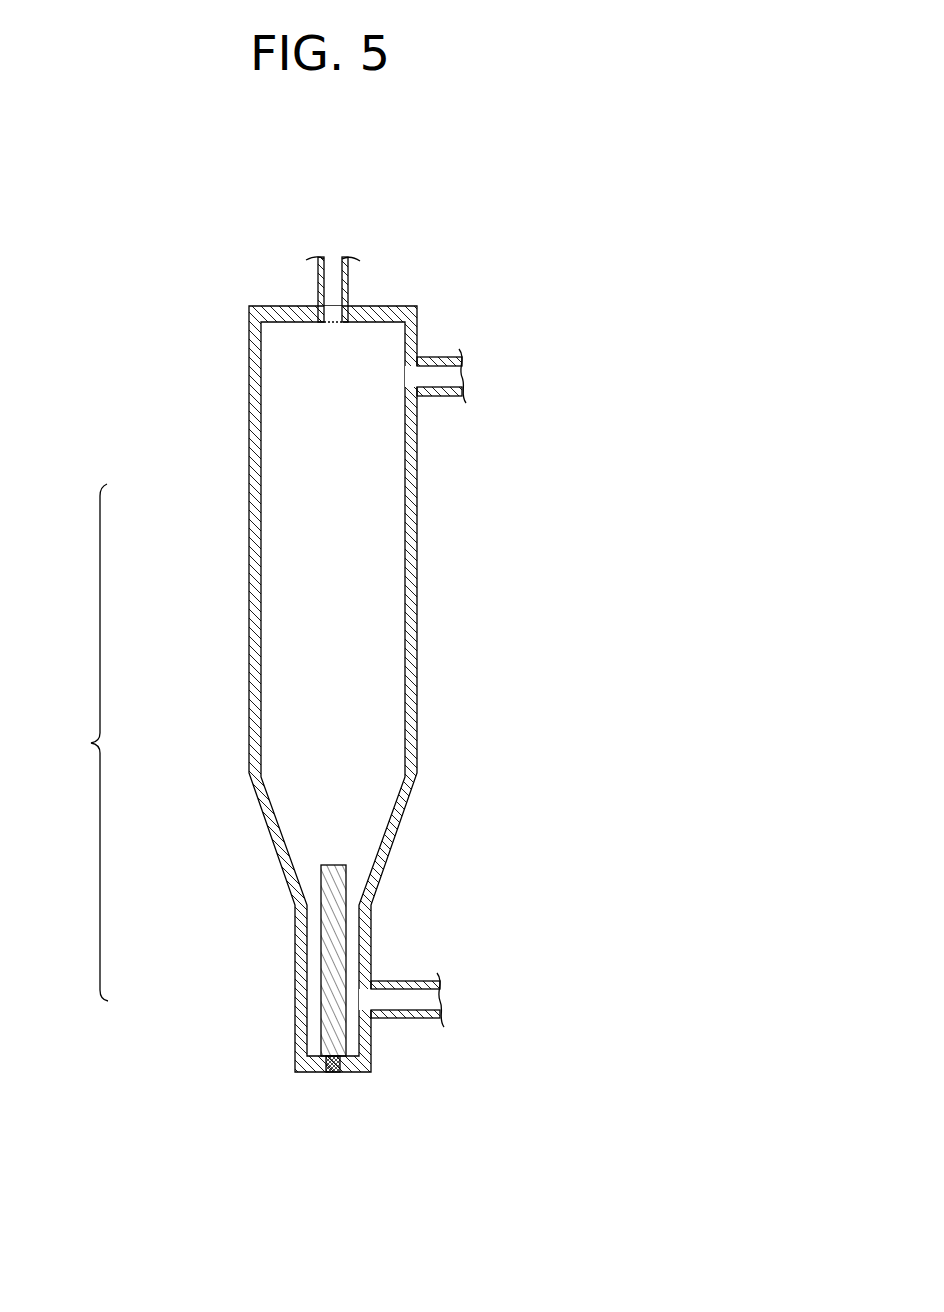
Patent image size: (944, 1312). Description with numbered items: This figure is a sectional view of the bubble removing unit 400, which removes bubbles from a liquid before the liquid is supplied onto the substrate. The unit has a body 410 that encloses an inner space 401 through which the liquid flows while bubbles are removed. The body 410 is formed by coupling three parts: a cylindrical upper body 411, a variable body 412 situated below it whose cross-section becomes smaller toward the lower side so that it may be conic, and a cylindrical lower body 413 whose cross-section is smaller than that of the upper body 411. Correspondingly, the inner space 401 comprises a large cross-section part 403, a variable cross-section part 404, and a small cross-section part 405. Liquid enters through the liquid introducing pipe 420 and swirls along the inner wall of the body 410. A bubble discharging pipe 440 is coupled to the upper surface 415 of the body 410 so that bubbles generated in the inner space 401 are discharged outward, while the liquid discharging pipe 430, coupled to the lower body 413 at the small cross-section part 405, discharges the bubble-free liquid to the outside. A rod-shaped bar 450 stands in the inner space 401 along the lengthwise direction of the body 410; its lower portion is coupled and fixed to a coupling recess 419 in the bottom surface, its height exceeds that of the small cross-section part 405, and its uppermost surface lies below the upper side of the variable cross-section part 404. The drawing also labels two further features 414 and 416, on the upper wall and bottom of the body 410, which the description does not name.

The bubble removing unit 400 is at (472, 170).
The inner space 401 is at (78, 742).
The large cross-section part 403 is at (310, 504).
The variable cross-section part 404 is at (311, 849).
The small cross-section part 405 is at (311, 1003).
The body 410 is at (251, 287).
The upper body 411 is at (417, 500).
The variable body 412 is at (396, 835).
The lower body 413 is at (367, 942).
The side wall surface 414 is at (417, 600).
The upper surface 415 is at (394, 308).
The bottom wall 416 is at (357, 1073).
The coupling recess 419 is at (333, 1073).
The liquid introducing pipe 420 is at (455, 372).
The liquid discharging pipe 430 is at (425, 1003).
The bubble discharging pipe 440 is at (333, 266).
The bar 450 is at (341, 862).